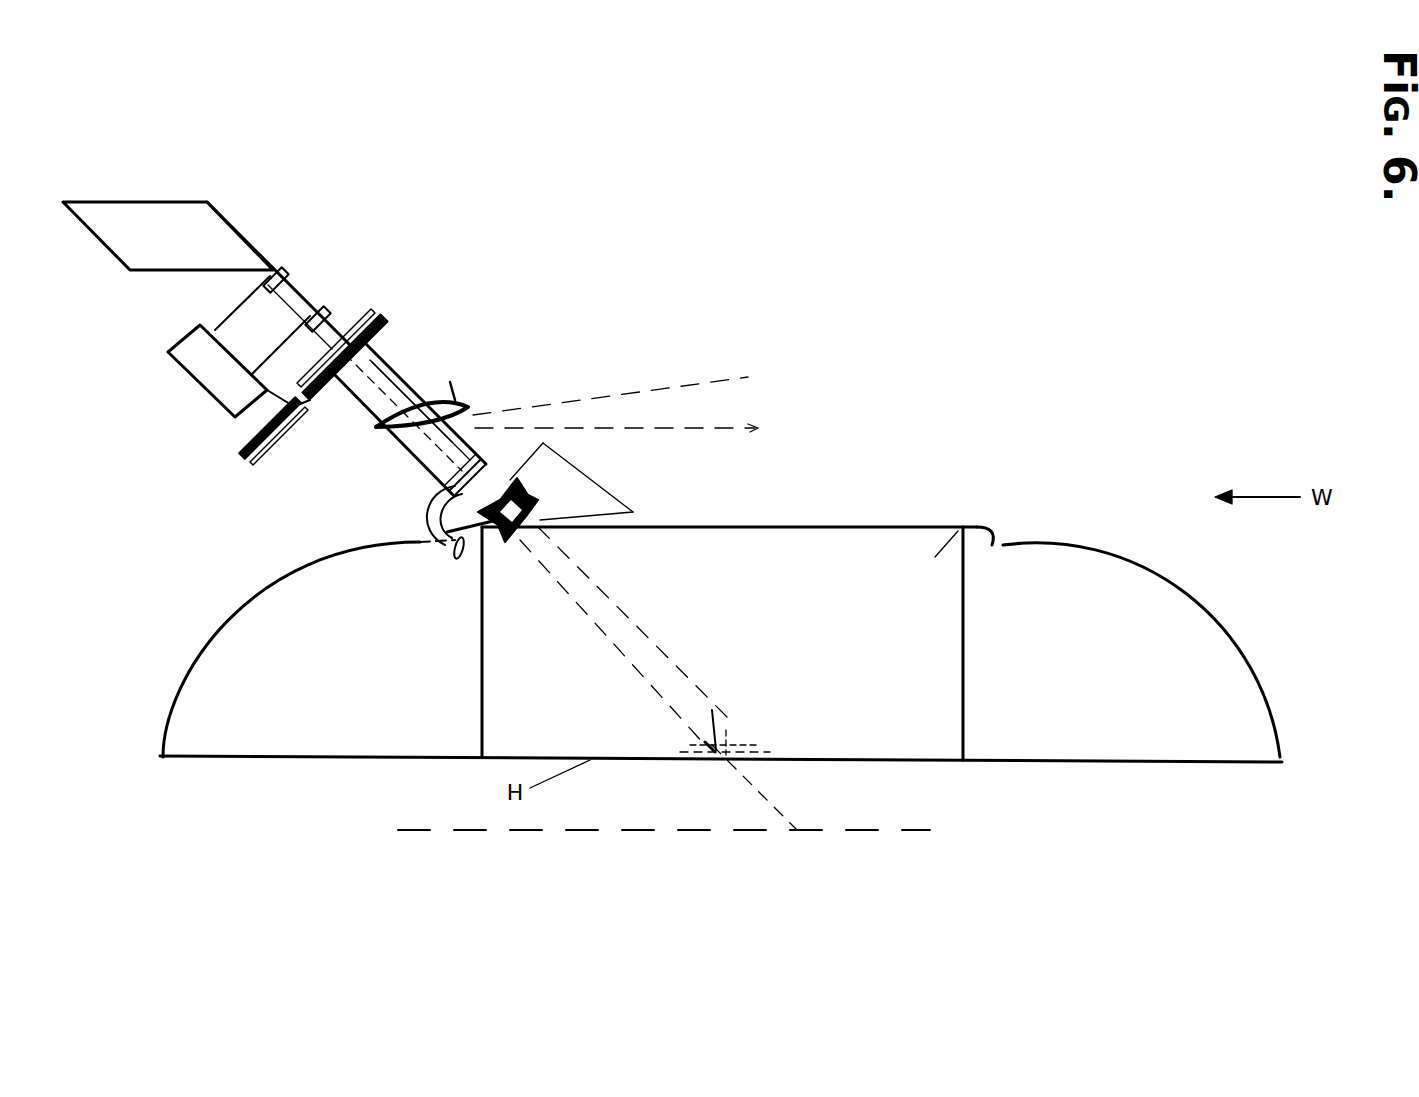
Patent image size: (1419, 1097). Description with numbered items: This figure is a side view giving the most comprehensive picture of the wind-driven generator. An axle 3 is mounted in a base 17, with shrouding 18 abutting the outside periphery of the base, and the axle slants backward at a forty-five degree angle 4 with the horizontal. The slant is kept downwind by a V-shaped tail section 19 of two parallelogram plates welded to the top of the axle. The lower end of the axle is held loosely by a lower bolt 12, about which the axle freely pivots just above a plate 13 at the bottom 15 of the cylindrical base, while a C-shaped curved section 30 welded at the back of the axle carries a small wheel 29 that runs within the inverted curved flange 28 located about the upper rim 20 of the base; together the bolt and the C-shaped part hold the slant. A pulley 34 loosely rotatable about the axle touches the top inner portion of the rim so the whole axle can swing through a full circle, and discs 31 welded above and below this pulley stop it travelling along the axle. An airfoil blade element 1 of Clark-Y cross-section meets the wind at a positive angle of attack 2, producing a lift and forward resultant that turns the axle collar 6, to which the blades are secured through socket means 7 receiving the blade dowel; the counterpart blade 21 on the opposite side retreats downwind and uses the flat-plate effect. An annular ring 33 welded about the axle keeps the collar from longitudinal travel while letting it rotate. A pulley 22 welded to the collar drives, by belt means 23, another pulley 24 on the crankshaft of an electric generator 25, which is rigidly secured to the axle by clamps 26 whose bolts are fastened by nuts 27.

The airfoil blade element 1 is at (470, 412).
The angle of attack 2 is at (755, 376).
The axle 3 is at (293, 283).
The 45 degree angle 4 is at (698, 803).
The axle collar 6 is at (395, 367).
The socket means 7 is at (430, 438).
The lower bolt 12 is at (737, 733).
The plate 13 is at (690, 757).
The bottom of the cylindrical base 15 is at (500, 760).
The base 17 is at (945, 667).
The shrouding 18 is at (208, 625).
The tail section 19 is at (175, 238).
The rim 20 is at (935, 557).
The blade 21 is at (470, 400).
The pulley 22 is at (385, 322).
The belt means 23 is at (306, 412).
The pulley 24 is at (262, 458).
The electric generator 25 is at (215, 367).
The clamps 26 is at (287, 270).
The nuts 27 is at (328, 310).
The inverted curved flange 28 is at (990, 525).
The small wheel 29 is at (333, 549).
The C-shaped curved section 30 is at (435, 516).
The discs 31 is at (448, 490).
The annular ring 33 is at (365, 312).
The pulley 34 is at (527, 502).